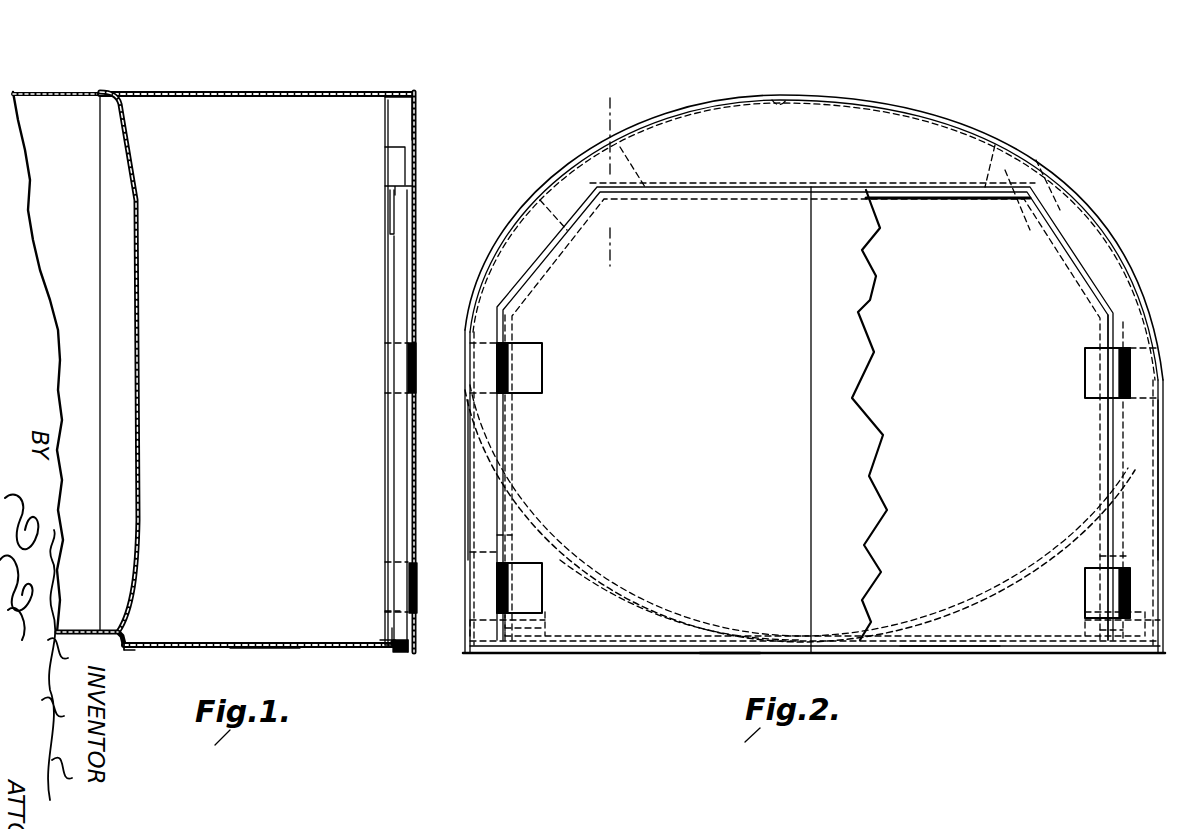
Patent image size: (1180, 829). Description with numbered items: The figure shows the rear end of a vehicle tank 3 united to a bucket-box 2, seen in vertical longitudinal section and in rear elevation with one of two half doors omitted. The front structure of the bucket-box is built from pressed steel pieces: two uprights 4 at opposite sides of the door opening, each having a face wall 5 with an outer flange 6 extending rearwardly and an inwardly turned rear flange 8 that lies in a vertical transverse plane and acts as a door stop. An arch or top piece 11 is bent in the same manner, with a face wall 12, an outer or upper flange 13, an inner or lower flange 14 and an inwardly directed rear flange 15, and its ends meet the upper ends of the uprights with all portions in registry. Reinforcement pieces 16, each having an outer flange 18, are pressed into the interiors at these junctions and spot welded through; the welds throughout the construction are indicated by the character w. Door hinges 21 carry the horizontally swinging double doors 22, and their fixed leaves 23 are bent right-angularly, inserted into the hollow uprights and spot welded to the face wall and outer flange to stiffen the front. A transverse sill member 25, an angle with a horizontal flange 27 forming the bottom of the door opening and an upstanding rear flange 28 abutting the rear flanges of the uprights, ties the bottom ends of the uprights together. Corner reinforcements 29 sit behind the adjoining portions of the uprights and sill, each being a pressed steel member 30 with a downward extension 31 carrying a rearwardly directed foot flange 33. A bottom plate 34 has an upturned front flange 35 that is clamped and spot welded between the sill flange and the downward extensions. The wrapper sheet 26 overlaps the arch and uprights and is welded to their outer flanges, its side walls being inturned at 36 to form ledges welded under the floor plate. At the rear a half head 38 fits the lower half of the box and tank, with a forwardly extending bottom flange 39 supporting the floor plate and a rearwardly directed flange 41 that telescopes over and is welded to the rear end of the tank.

In FIG. 1, the bucket-box 2 is at (283, 90).
In FIG. 1, the tank 3 is at (50, 92).
In FIG. 2, the uprights 4 is at (477, 470).
In FIG. 2, the face wall 5 is at (485, 428).
In FIG. 2, the outer flange 6 is at (609, 182).
In FIG. 2, the rear flange 8 is at (1113, 430).
In FIG. 1, the arch or top piece 11 is at (417, 110).
In FIG. 2, the arch or top piece 11 is at (878, 122).
In FIG. 1, the face wall of arch 12 is at (417, 128).
In FIG. 2, the face wall of arch 12 is at (705, 130).
In FIG. 1, the outer or upper flange of arch 13 is at (385, 105).
In FIG. 2, the outer or upper flange of arch 13 is at (774, 98).
In FIG. 1, the inner or lower flange of arch 14 is at (412, 196).
In FIG. 1, the rear flange of arch 15 is at (392, 196).
In FIG. 2, the rear flange of arch 15 is at (904, 200).
In FIG. 1, the reinforcement pieces 16 is at (404, 158).
In FIG. 2, the reinforcement pieces 16 is at (636, 160).
In FIG. 1, the outer flange of reinforcement 18 is at (385, 136).
In FIG. 1, the door hinges 21 is at (408, 355).
In FIG. 2, the door hinges 21 is at (536, 362).
In FIG. 1, the double doors 22 is at (400, 266).
In FIG. 2, the double doors 22 is at (880, 268).
In FIG. 1, the fixed leaves of hinges 23 is at (388, 394).
In FIG. 2, the fixed leaves of hinges 23 is at (484, 345).
In FIG. 1, the transverse sill member 25 is at (400, 652).
In FIG. 2, the transverse sill member 25 is at (672, 656).
In FIG. 1, the wrapper sheet 26 is at (192, 92).
In FIG. 2, the wrapper sheet 26 is at (942, 112).
In FIG. 1, the horizontal flange of sill 27 is at (412, 654).
In FIG. 2, the horizontal flange of sill 27 is at (624, 656).
In FIG. 1, the upstanding rear flange of sill 28 is at (392, 646).
In FIG. 2, the upstanding rear flange of sill 28 is at (976, 652).
In FIG. 1, the corner reinforcements 29 is at (393, 610).
In FIG. 2, the corner reinforcements 29 is at (510, 536).
In FIG. 2, the stop 30 is at (470, 552).
In FIG. 1, the downward extension 31 is at (394, 640).
In FIG. 2, the downward extension 31 is at (560, 636).
In FIG. 1, the foot flange 33 is at (383, 640).
In FIG. 1, the bottom plate 34 is at (252, 650).
In FIG. 2, the bottom plate 34 is at (731, 656).
In FIG. 1, the upturned front flange of bottom plate 35 is at (386, 648).
In FIG. 1, the inturned ledges of wrapper sheet 36 is at (196, 650).
In FIG. 1, the half head 38 is at (125, 635).
In FIG. 2, the half head 38 is at (620, 592).
In FIG. 1, the bottom flange of half head 39 is at (138, 660).
In FIG. 2, the rearwardly directed flange of half head 41 is at (670, 616).
In FIG. 1, the welds w is at (128, 652).
In FIG. 2, the welds w is at (622, 162).